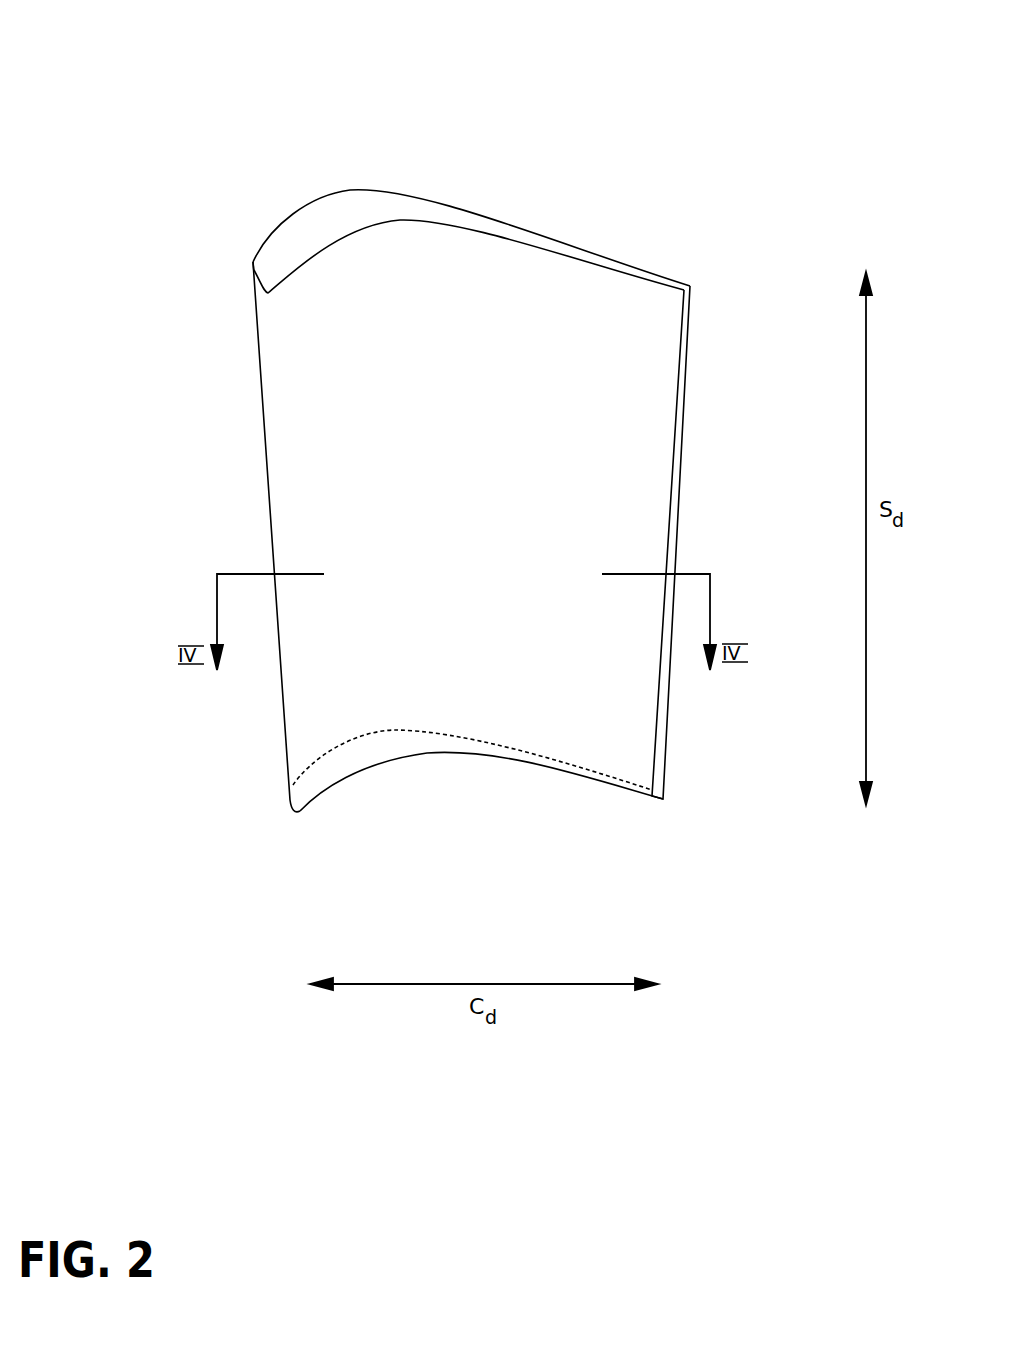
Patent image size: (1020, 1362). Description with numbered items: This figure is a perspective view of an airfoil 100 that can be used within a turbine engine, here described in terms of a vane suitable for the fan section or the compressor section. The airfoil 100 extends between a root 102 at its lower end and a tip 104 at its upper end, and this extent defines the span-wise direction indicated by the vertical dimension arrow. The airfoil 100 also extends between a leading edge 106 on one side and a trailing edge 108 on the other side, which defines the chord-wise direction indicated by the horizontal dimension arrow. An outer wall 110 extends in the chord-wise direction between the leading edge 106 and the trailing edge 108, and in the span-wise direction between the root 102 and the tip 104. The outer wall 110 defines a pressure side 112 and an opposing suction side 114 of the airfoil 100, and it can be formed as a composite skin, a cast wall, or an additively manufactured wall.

The airfoil 100 is at (177, 34).
The root 102 is at (322, 806).
The tip 104 is at (469, 294).
The leading edge 106 is at (258, 343).
The trailing edge 108 is at (679, 480).
The outer wall 110 is at (252, 264).
The pressure side 112 is at (585, 273).
The suction side 114 is at (587, 245).